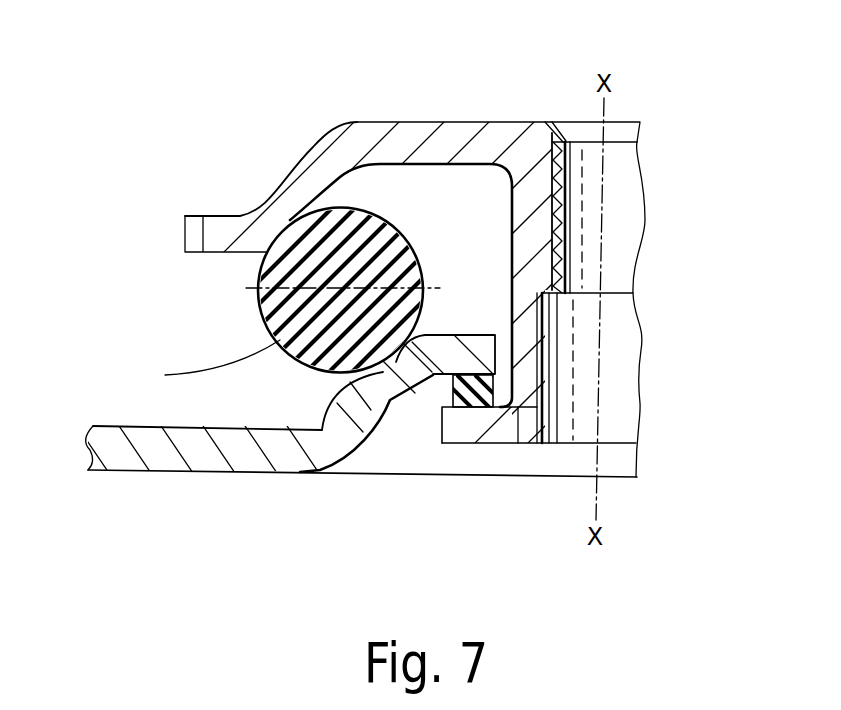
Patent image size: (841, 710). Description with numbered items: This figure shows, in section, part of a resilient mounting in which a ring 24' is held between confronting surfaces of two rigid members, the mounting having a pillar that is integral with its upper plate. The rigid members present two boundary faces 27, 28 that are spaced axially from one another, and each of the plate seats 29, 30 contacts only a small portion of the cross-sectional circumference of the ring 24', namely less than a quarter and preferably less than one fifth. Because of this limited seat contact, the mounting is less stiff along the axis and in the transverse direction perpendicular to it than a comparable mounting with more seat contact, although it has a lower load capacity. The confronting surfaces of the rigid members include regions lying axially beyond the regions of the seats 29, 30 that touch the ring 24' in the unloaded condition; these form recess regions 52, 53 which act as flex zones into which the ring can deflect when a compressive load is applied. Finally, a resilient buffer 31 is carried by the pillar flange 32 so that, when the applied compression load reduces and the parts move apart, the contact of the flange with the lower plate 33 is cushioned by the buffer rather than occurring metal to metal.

The ring 24' is at (201, 367).
The boundary face 27 is at (457, 335).
The boundary face 28 is at (238, 255).
The plate seat 29 is at (386, 368).
The plate seat 30 is at (290, 217).
The resilient buffer 31 is at (464, 408).
The pillar flange 32 is at (472, 423).
The lower plate 33 is at (212, 450).
The recess region 52 is at (284, 392).
The recess region 53 is at (375, 190).